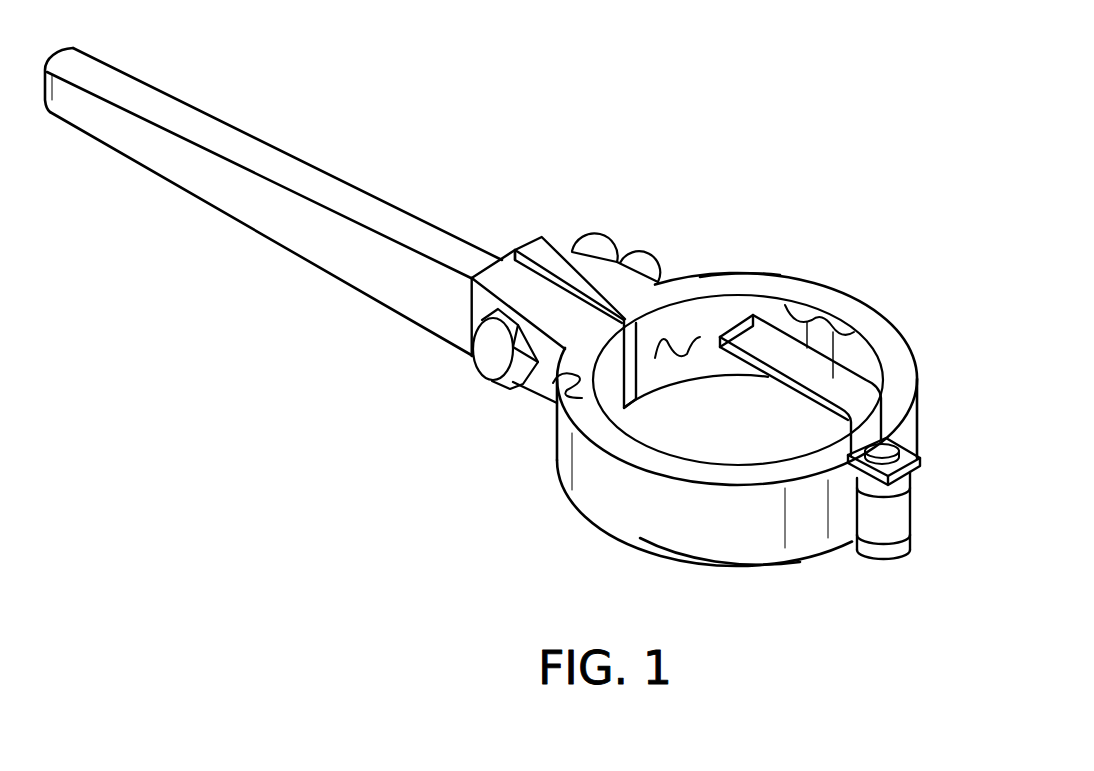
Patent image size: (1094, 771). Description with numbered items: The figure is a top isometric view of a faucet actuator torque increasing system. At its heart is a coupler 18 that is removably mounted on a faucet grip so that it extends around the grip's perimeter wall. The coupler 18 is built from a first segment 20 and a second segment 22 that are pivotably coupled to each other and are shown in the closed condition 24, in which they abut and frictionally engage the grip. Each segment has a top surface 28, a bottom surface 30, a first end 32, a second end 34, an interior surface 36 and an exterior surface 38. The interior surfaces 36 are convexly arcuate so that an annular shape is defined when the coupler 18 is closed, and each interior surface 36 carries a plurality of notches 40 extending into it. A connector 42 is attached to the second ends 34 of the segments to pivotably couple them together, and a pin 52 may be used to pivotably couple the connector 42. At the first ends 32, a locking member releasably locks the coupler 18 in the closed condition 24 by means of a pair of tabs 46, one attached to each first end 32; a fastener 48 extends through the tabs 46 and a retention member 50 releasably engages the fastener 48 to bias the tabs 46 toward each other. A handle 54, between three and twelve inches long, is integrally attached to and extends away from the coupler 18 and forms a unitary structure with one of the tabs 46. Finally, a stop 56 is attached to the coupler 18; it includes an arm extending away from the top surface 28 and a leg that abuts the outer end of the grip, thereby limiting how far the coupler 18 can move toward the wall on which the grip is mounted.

The coupler 18 is at (625, 183).
The first segment 20 is at (597, 481).
The second segment 22 is at (752, 287).
The closed condition 24 is at (506, 204).
The top surface 28 is at (555, 383).
The bottom surface 30 is at (783, 552).
The first end 32 is at (472, 317).
The second end 34 is at (842, 501).
The interior surface 36 is at (676, 343).
The exterior surface 38 is at (683, 517).
The notches 40 is at (783, 310).
The connector 42 is at (901, 528).
The tabs 46 is at (503, 260).
The fastener 48 is at (493, 357).
The retention member 50 is at (596, 248).
The pin 52 is at (882, 451).
The handle 54 is at (180, 163).
The stop 56 is at (867, 410).